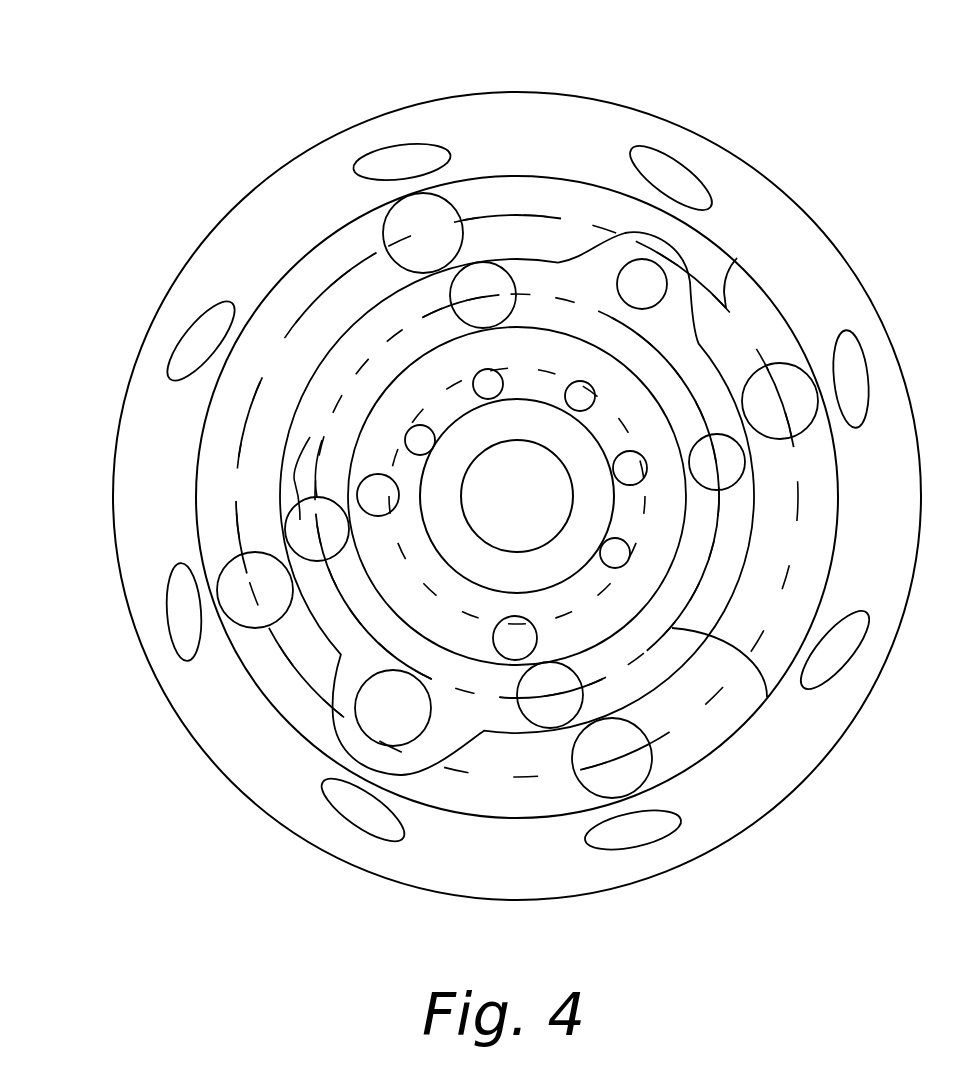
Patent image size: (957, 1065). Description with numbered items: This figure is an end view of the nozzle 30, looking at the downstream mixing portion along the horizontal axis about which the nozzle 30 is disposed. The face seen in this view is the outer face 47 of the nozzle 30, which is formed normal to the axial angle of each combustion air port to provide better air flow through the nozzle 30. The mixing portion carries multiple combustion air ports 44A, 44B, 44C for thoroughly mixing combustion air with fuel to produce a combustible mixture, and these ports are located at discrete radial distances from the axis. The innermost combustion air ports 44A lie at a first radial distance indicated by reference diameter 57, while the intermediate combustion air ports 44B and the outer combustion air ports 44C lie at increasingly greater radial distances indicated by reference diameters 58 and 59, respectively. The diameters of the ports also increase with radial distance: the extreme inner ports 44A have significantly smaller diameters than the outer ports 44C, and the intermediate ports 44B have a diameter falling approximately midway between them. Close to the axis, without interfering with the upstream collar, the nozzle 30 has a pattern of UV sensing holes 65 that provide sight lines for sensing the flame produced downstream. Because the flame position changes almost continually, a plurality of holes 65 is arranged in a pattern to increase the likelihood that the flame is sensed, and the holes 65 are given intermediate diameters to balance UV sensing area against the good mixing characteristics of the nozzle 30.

The nozzle 30 is at (435, 92).
The outer face 47 is at (228, 447).
The reference diameter 59 is at (737, 258).
The reference diameter 58 is at (767, 697).
The reference diameter 57 is at (657, 540).
The innermost combustion air ports 44A is at (420, 505).
The intermediate combustion air ports 44B is at (320, 486).
The outer combustion air ports 44C is at (232, 577).
The UV sensing holes 65 is at (488, 384).